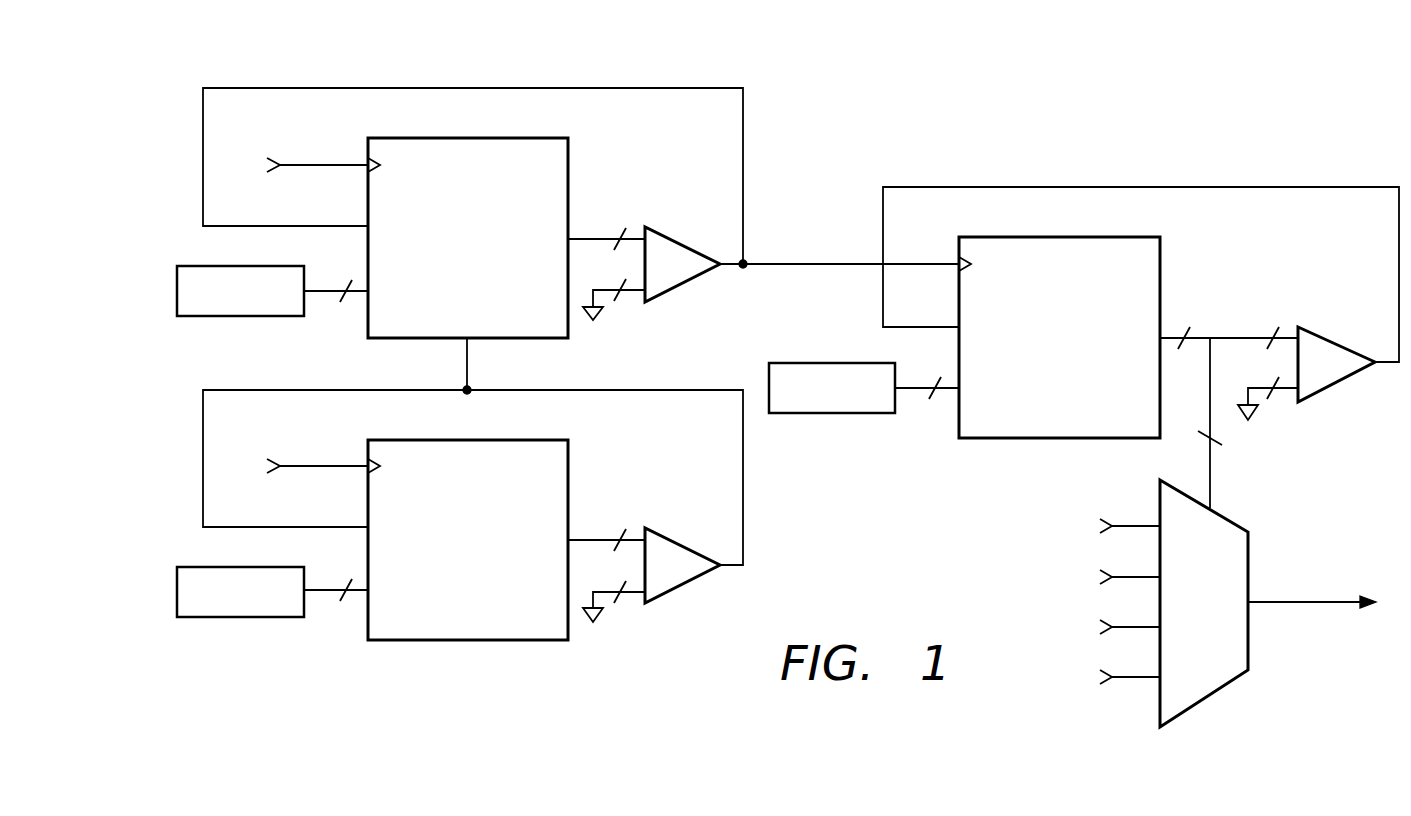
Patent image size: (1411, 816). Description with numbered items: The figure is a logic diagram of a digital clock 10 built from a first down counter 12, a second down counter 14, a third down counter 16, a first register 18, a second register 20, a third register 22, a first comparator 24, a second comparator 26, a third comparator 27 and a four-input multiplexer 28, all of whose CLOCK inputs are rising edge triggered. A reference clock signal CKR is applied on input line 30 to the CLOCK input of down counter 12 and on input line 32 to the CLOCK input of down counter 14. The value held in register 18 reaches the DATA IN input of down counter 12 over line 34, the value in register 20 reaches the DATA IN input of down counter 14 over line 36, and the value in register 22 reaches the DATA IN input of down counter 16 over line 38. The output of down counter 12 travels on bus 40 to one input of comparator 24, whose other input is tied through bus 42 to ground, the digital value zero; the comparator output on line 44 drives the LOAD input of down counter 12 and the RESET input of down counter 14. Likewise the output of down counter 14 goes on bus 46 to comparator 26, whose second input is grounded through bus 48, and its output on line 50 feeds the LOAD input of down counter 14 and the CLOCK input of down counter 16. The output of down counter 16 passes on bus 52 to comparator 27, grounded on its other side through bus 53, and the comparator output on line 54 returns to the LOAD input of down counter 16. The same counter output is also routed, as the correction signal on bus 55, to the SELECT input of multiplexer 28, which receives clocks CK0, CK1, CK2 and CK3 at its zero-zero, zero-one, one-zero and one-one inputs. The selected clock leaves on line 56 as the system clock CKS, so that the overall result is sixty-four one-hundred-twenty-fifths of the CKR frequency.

The digital clock 10 is at (840, 95).
The first down counter 12 is at (466, 641).
The second down counter 14 is at (568, 163).
The third down counter 16 is at (1160, 263).
The first register 18 is at (177, 591).
The second register 20 is at (177, 291).
The third register 22 is at (832, 415).
The first comparator 24 is at (680, 541).
The second comparator 26 is at (682, 243).
The third comparator 27 is at (1337, 340).
The four-input multiplexer 28 is at (1248, 637).
The input line 30 is at (292, 464).
The input line 32 is at (292, 163).
The line 34 is at (330, 595).
The line 36 is at (330, 296).
The line 38 is at (920, 393).
The bus 40 is at (594, 537).
The bus 42 is at (627, 594).
The line 44 is at (732, 567).
The bus 46 is at (598, 235).
The bus 48 is at (627, 293).
The line 50 is at (820, 263).
The bus 52 is at (1235, 337).
The bus 53 is at (1282, 390).
The line 54 is at (1140, 187).
The bus 55 is at (1210, 472).
The line 56 is at (1267, 597).